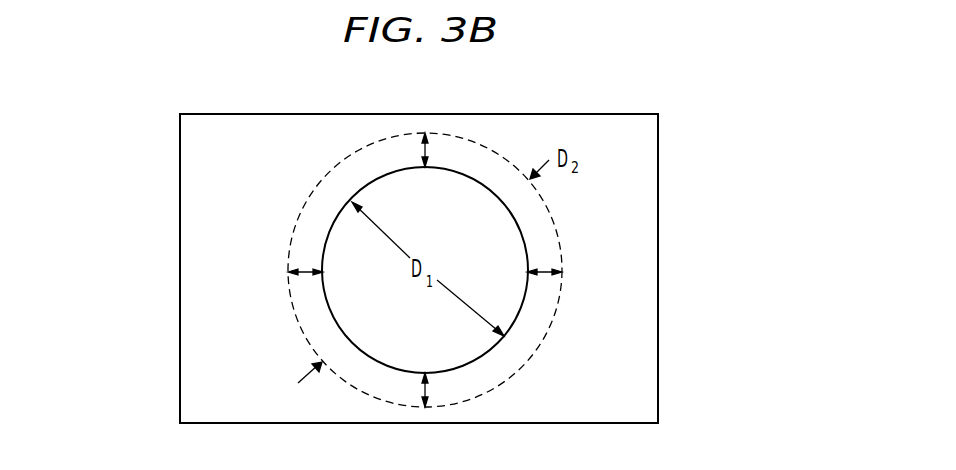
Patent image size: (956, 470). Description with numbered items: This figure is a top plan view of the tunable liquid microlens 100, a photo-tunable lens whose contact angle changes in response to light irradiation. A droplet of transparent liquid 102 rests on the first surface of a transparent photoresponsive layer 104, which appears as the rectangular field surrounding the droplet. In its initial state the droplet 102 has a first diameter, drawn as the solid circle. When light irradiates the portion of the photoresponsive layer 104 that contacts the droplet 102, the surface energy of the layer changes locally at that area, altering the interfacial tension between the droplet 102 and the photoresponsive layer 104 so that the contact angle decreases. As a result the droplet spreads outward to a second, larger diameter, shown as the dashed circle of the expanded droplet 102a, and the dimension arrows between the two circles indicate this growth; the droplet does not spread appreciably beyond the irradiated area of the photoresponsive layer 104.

The tunable liquid microlens 100 is at (390, 268).
The droplet of transparent liquid 102 is at (510, 239).
The expanded droplet 102a is at (557, 309).
The transparent photoresponsive layer 104 is at (643, 160).